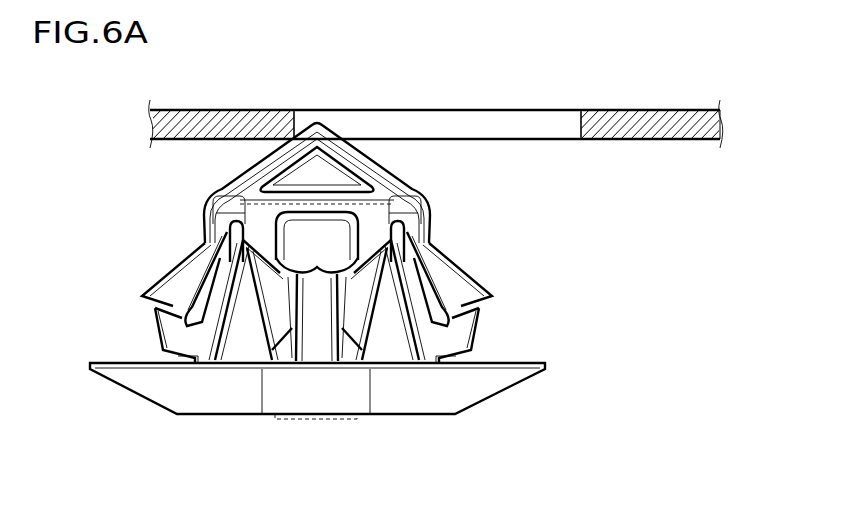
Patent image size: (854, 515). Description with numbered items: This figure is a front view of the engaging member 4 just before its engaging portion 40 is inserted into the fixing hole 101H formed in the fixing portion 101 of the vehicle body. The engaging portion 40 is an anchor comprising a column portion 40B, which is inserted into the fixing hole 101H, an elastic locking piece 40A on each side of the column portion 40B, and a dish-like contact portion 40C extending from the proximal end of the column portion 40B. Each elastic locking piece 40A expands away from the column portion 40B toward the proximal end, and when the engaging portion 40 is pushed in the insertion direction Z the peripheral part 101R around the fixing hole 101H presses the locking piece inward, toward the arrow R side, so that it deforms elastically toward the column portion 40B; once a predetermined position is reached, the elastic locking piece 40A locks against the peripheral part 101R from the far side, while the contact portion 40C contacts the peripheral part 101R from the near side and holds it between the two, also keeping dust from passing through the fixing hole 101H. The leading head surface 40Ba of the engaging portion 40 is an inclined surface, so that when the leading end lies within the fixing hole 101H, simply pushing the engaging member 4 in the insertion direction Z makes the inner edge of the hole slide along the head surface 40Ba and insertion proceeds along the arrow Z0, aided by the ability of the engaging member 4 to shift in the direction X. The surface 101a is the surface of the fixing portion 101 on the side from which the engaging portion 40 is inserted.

The engaging member 4 is at (142, 414).
The engaging portion 40 is at (316, 283).
The elastic locking piece 40A is at (157, 310).
The column portion 40B is at (330, 292).
The head surface 40Ba is at (247, 173).
The contact portion 40C is at (463, 402).
The fixing portion 101 is at (631, 111).
The fixing hole 101H is at (487, 118).
The peripheral part 101R is at (240, 108).
The surface 101a is at (717, 142).
The arrow R side R is at (250, 318).
The direction X is at (55, 393).
The insertion direction Z is at (405, 139).
The arrow Z0 direction Z0 is at (367, 147).